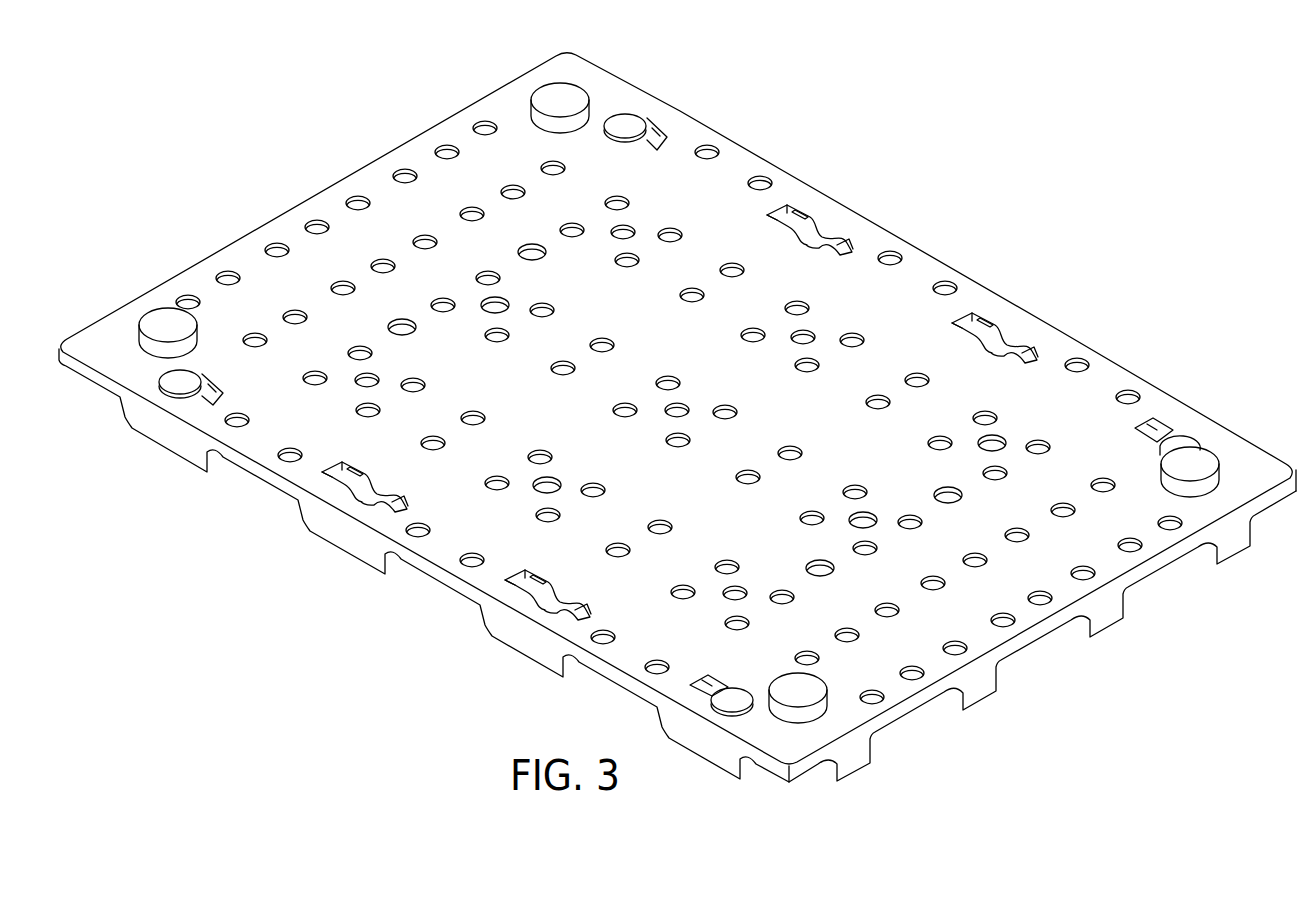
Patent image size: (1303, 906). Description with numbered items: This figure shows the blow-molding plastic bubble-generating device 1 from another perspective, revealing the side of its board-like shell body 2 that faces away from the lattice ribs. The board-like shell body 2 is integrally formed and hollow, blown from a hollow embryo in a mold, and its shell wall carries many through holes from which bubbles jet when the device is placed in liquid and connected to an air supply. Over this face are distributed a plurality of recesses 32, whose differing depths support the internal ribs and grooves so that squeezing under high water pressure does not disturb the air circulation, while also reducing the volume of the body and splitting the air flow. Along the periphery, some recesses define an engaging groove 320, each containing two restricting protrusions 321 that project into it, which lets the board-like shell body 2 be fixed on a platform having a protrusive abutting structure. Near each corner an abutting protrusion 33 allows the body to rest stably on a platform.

The blow-molding plastic bubble-generating device 1 is at (311, 158).
The board-like shell body 2 is at (610, 92).
The recess 32 is at (806, 334).
The engaging groove 320 is at (815, 240).
The restricting protrusion 321 is at (801, 212).
The abutting protrusion 33 is at (1197, 455).